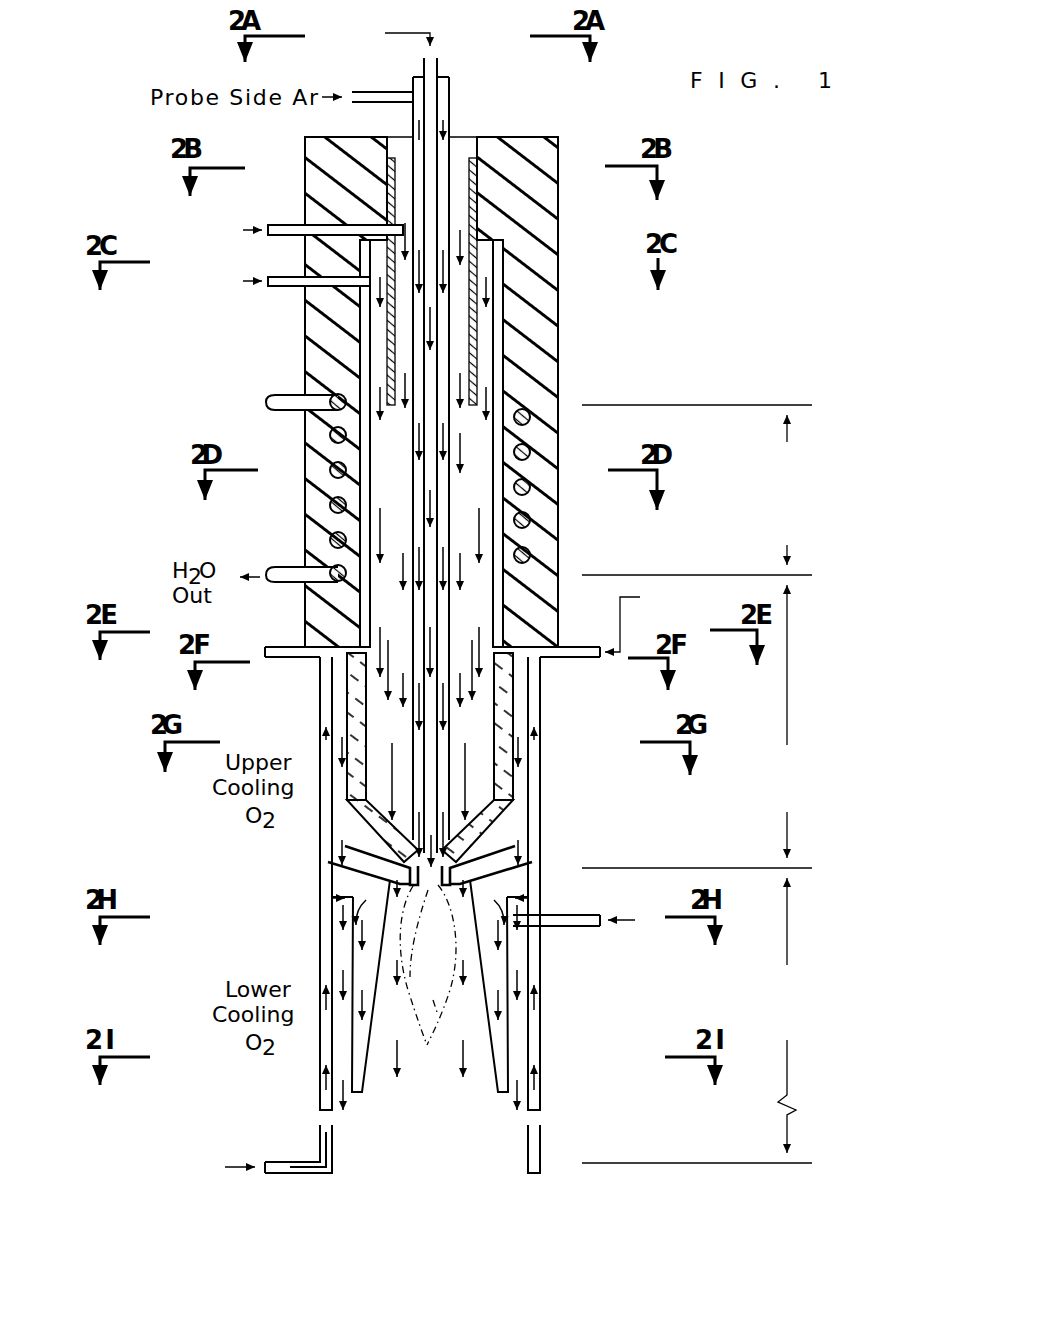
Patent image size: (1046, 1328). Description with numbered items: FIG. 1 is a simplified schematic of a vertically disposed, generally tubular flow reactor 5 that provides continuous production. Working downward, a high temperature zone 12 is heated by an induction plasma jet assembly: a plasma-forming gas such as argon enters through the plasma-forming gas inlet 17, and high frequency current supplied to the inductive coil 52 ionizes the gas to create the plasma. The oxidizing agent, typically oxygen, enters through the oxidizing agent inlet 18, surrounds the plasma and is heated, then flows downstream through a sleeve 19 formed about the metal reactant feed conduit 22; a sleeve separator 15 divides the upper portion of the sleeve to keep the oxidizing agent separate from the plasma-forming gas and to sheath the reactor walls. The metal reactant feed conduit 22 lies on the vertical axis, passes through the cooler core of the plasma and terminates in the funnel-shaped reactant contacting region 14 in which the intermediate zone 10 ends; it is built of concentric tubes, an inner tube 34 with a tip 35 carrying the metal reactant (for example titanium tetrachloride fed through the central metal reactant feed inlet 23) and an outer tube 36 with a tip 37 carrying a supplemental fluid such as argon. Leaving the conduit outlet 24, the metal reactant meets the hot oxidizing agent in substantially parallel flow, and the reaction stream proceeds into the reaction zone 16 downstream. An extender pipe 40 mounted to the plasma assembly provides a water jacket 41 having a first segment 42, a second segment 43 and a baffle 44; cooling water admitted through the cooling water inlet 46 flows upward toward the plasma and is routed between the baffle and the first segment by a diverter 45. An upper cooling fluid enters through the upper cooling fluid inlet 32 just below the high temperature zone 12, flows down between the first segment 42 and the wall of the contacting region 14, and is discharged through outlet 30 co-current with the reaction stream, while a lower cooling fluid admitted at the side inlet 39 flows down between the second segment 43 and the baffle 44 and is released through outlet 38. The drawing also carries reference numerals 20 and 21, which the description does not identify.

The flow reactor 5 is at (620, 236).
The intermediate zone 10 is at (723, 716).
The high temperature zone 12 is at (720, 485).
The reactant contacting region 14 is at (480, 848).
The sleeve separator 15 is at (355, 345).
The reaction zone 16 is at (706, 1015).
The plasma-forming gas inlet 17 is at (302, 222).
The oxidizing agent inlet 18 is at (283, 292).
The sleeve 19 is at (390, 432).
The nozzle plate 20 is at (326, 862).
The flame 21 is at (437, 965).
The metal reactant feed conduit 22 is at (444, 68).
The metal reactant feed inlet 23 is at (438, 56).
The outlet of the metal reactant feed conduit 24 is at (445, 840).
The outlet 30 is at (540, 893).
The upper cooling fluid inlet 32 is at (552, 660).
The inner tube 34 is at (440, 108).
The tip 35 is at (454, 840).
The outer tube 36 is at (478, 187).
The tip 37 is at (340, 835).
The outlet 38 is at (532, 1082).
The lower cooling fluid inlet 39 is at (578, 930).
The extender pipe 40 is at (322, 918).
The water jacket 41 is at (320, 1088).
The first segment 42 is at (542, 715).
The second segment 43 is at (337, 955).
The baffle 44 is at (521, 1040).
The diverter 45 is at (332, 886).
The cooling water inlet 46 is at (303, 1160).
The inductive coil 52 is at (270, 396).